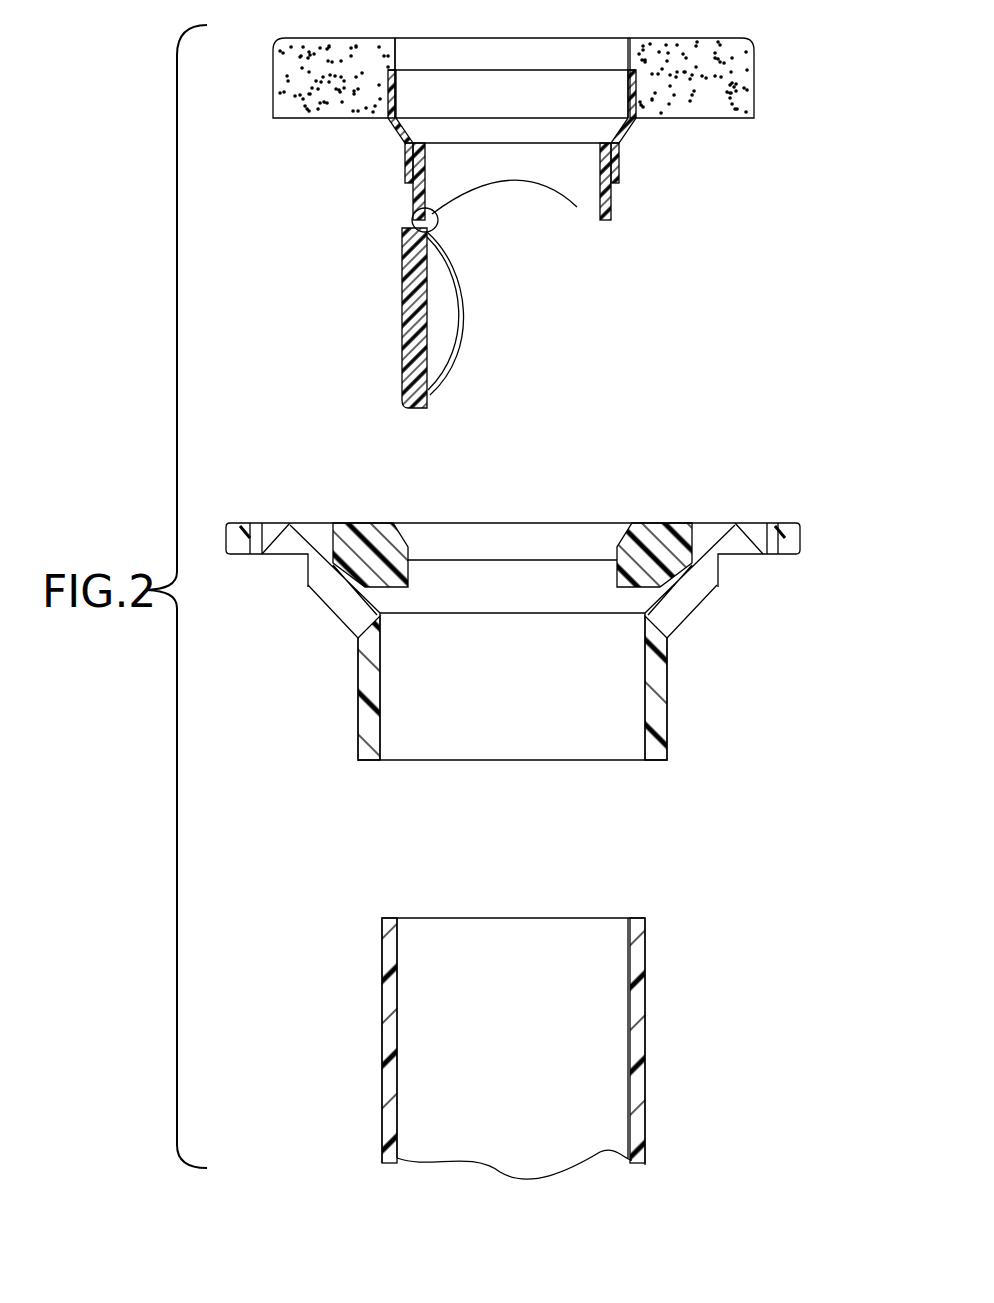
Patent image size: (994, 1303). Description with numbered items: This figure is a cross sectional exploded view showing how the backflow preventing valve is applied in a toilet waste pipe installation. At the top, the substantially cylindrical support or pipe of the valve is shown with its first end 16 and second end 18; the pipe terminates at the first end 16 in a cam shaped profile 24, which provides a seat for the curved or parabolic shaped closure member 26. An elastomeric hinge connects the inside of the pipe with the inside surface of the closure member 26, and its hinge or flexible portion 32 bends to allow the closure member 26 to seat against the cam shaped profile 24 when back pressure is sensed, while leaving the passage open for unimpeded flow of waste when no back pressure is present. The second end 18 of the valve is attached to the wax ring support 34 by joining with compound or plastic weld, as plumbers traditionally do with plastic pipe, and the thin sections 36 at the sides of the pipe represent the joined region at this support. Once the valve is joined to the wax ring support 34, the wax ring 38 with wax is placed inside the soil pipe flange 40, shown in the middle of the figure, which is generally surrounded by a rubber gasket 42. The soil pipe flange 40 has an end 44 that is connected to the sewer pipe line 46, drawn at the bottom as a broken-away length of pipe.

The first end 16 is at (611, 218).
The second end 18 is at (619, 175).
The cam shaped profile 24 is at (577, 207).
The closure member 26 is at (402, 330).
The flexible portion 32 is at (412, 226).
The wax ring support 34 is at (619, 147).
The flange portion 36 is at (405, 181).
The wax ring 38 is at (754, 65).
The soil pipe flange 40 is at (737, 523).
The rubber gasket 42 is at (670, 523).
The end 44 is at (667, 715).
The sewer pipe line 46 is at (645, 1005).